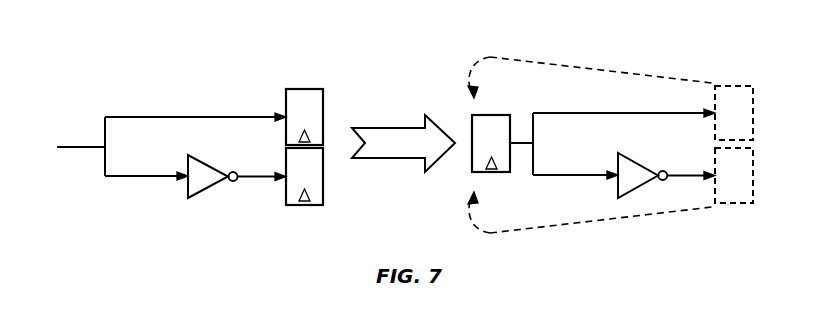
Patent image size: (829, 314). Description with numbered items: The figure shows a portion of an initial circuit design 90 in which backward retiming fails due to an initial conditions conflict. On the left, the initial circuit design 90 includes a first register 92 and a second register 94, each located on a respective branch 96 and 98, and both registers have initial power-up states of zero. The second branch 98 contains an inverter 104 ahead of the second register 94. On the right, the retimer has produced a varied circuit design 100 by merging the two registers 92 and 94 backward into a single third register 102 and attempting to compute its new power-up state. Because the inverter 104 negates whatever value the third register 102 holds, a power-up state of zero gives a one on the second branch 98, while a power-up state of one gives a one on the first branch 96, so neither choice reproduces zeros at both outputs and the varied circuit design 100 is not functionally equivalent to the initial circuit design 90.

The initial circuit design 90 is at (175, 71).
The first register 92 is at (306, 90).
The second register 94 is at (303, 207).
The branch 96 is at (174, 118).
The branch 98 is at (140, 177).
The varied circuit design 100 is at (467, 49).
The third register 102 is at (492, 116).
The inverter 104 is at (636, 158).